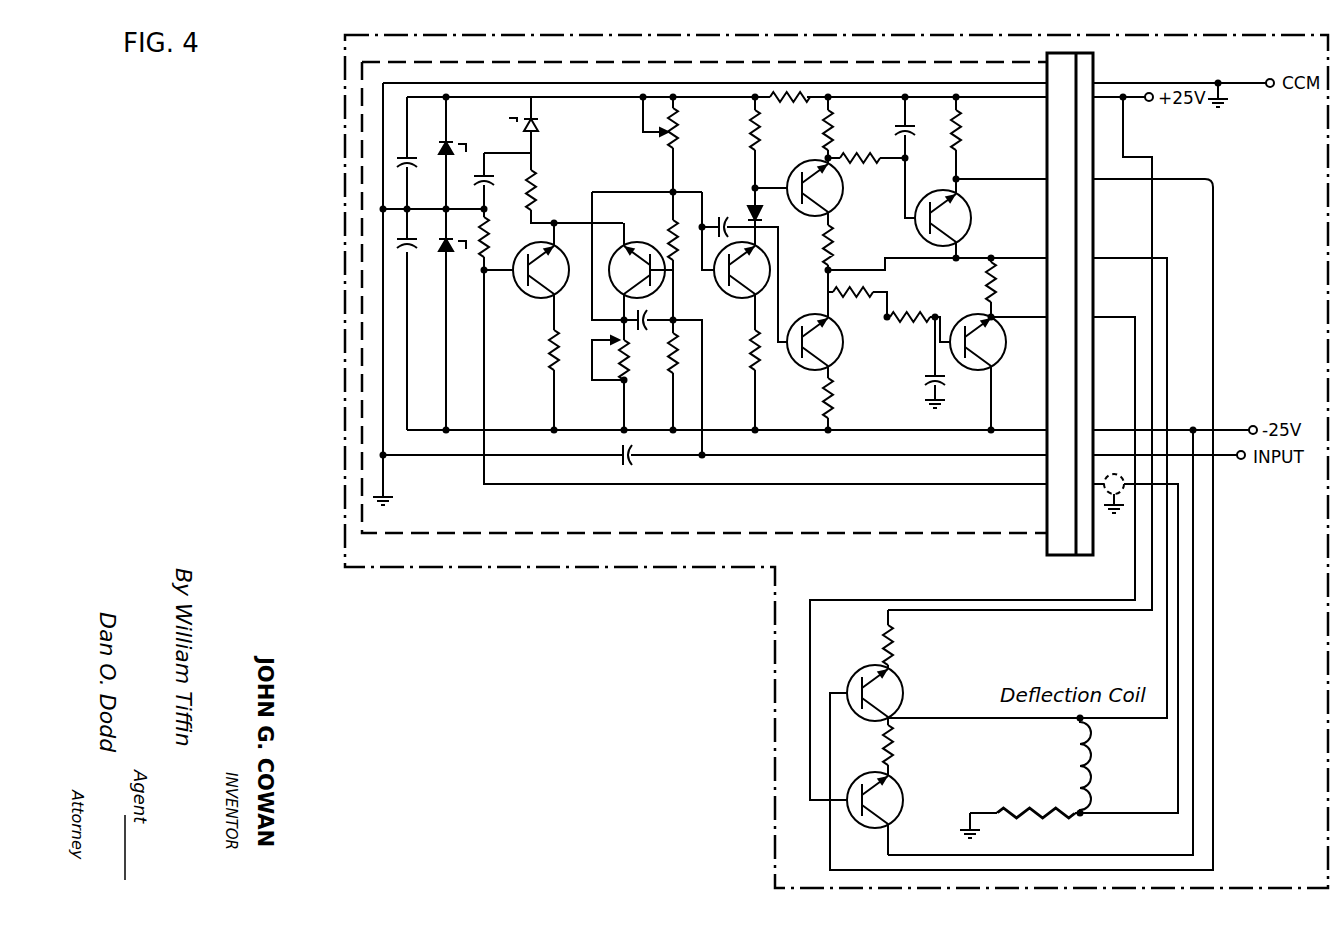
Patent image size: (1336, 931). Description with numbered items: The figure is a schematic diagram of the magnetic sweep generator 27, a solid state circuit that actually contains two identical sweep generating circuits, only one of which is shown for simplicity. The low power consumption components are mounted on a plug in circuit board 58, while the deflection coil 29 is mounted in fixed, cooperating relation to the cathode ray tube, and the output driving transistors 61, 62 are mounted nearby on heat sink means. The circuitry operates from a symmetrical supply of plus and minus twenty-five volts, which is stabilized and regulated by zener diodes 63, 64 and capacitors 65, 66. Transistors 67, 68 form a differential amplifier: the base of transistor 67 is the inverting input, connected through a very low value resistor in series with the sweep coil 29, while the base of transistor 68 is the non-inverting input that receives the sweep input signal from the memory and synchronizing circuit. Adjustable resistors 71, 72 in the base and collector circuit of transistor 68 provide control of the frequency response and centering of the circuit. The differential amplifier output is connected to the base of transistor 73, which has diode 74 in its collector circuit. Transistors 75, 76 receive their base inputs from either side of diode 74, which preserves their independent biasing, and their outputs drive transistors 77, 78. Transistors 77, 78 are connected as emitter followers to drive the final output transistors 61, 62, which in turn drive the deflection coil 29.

The sweep generator 27 is at (568, 572).
The deflection coil 29 is at (1090, 775).
The plug in circuit board 58 is at (812, 535).
The output driving transistor 61 is at (869, 664).
The output driving transistor 62 is at (902, 792).
The zener diode 63 is at (450, 140).
The zener diode 64 is at (460, 251).
The capacitor 65 is at (414, 148).
The capacitor 66 is at (419, 251).
The transistor 67 is at (514, 253).
The transistor 68 is at (647, 243).
The adjustable resistor 71 is at (680, 142).
The adjustable resistor 72 is at (632, 355).
The transistor 73 is at (722, 292).
The diode 74 is at (748, 205).
The transistor 75 is at (784, 170).
The transistor 76 is at (822, 314).
The transistor 77 is at (942, 186).
The transistor 78 is at (973, 312).